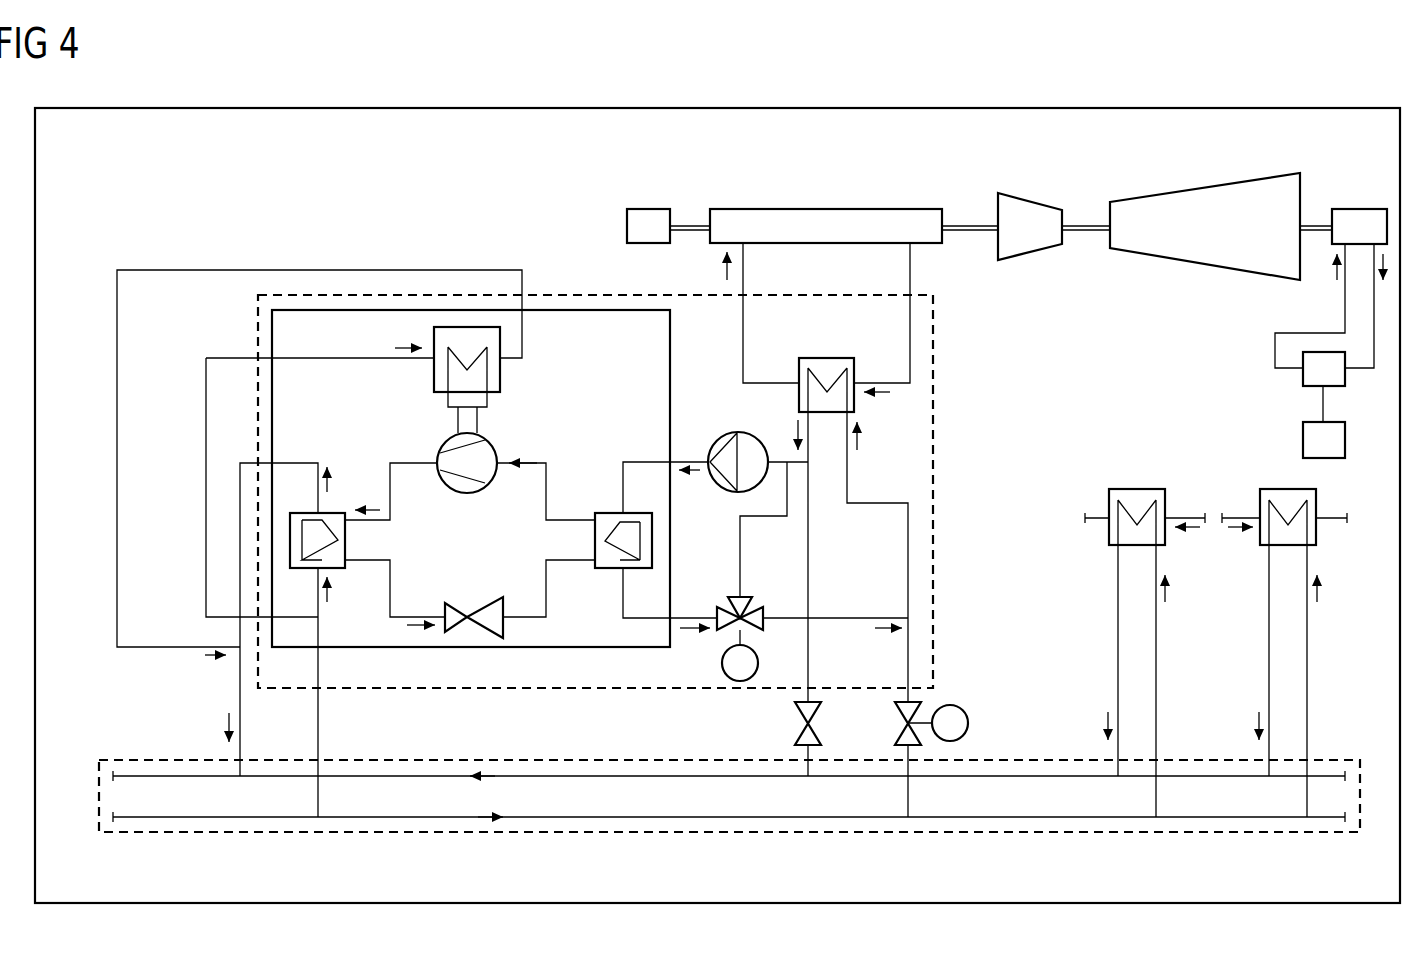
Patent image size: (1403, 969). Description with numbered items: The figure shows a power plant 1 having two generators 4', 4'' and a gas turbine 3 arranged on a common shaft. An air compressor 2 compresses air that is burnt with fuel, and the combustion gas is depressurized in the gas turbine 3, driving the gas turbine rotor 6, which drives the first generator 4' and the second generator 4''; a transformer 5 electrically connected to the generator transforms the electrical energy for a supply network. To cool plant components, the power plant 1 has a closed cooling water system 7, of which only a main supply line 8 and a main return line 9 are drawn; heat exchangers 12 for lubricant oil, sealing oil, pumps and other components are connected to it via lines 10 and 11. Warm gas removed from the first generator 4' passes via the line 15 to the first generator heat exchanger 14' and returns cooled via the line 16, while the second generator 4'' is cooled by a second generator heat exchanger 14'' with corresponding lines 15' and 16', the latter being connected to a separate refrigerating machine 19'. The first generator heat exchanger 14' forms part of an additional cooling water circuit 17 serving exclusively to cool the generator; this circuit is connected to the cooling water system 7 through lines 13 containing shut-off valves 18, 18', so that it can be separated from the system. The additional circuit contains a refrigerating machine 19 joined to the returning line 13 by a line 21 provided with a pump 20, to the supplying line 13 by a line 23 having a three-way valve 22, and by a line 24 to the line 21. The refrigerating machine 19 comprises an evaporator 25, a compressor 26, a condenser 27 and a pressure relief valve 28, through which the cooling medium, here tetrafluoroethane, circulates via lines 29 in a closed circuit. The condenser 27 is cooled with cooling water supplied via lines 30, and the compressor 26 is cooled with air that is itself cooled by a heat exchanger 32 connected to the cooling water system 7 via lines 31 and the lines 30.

The power plant 1 is at (1120, 95).
The air compressor 2 is at (1197, 183).
The gas turbine 3 is at (1033, 195).
The first generator 4' is at (826, 190).
The second generator 4'' is at (1360, 191).
The transformer 5 is at (647, 207).
The gas turbine rotor 6 is at (962, 222).
The cooling water system 7 is at (158, 760).
The main supply line 8 is at (588, 830).
The main return line 9 is at (588, 772).
The line 10 is at (1118, 637).
The line 11 is at (1269, 675).
The heat exchanger 12 is at (1109, 535).
The lines 13 is at (808, 538).
The first generator heat exchanger 14' is at (866, 404).
The second generator heat exchanger 14'' is at (1283, 381).
The line 15 is at (922, 317).
The line 15' is at (1370, 343).
The line 16 is at (768, 313).
The line 16' is at (1271, 306).
The additional cooling water circuit 17 is at (608, 294).
The shut-off valve 18 is at (918, 797).
The shut-off valve 18' is at (823, 797).
The refrigerating machine 19 is at (471, 443).
The separate refrigerating machine 19' is at (1285, 426).
The pump 20 is at (724, 438).
The line 21 is at (650, 460).
The three-way valve 22 is at (767, 627).
The line 23 is at (700, 612).
The line 24 is at (762, 518).
The evaporator 25 is at (612, 510).
The compressor 26 is at (496, 448).
The condenser 27 is at (338, 510).
The pressure relief valve 28 is at (475, 632).
The lines 29 is at (390, 502).
The lines 30 is at (288, 462).
The lines 31 is at (117, 527).
The heat exchanger 32 is at (434, 375).